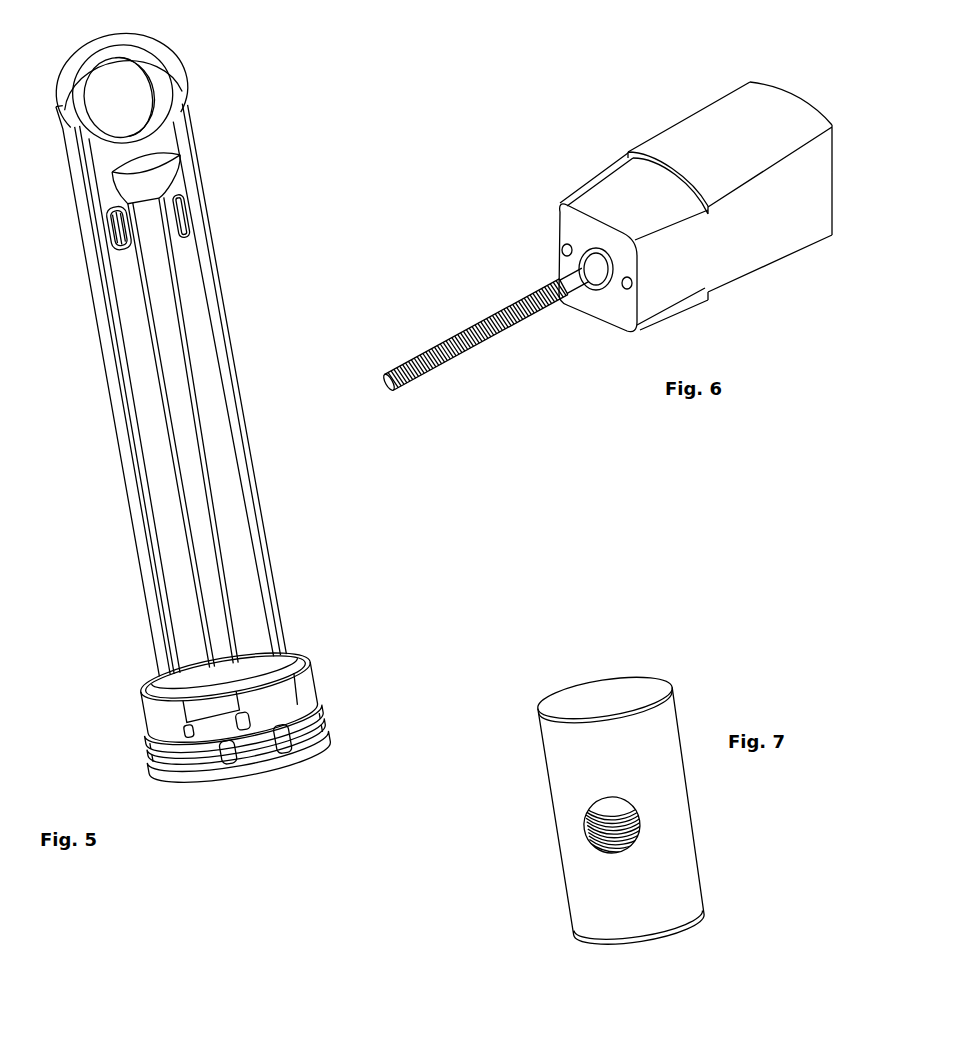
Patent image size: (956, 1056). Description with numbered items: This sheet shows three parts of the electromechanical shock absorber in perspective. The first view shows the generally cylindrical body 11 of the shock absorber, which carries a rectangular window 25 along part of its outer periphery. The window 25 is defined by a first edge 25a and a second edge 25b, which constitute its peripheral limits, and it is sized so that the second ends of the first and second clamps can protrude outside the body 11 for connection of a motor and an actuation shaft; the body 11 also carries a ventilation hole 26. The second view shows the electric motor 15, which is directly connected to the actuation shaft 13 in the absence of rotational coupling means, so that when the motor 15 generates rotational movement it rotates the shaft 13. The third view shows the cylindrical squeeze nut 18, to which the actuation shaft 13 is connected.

In FIG. 5, the body 11 is at (290, 503).
In FIG. 5, the ventilation hole 26 is at (185, 210).
In FIG. 5, the window 25 is at (254, 717).
In FIG. 5, the first edge of window 25a is at (183, 708).
In FIG. 5, the second edge of window 25b is at (300, 698).
In FIG. 6, the motor 15 is at (685, 130).
In FIG. 6, the shaft 13 is at (422, 365).
In FIG. 7, the squeeze nut 18 is at (570, 768).